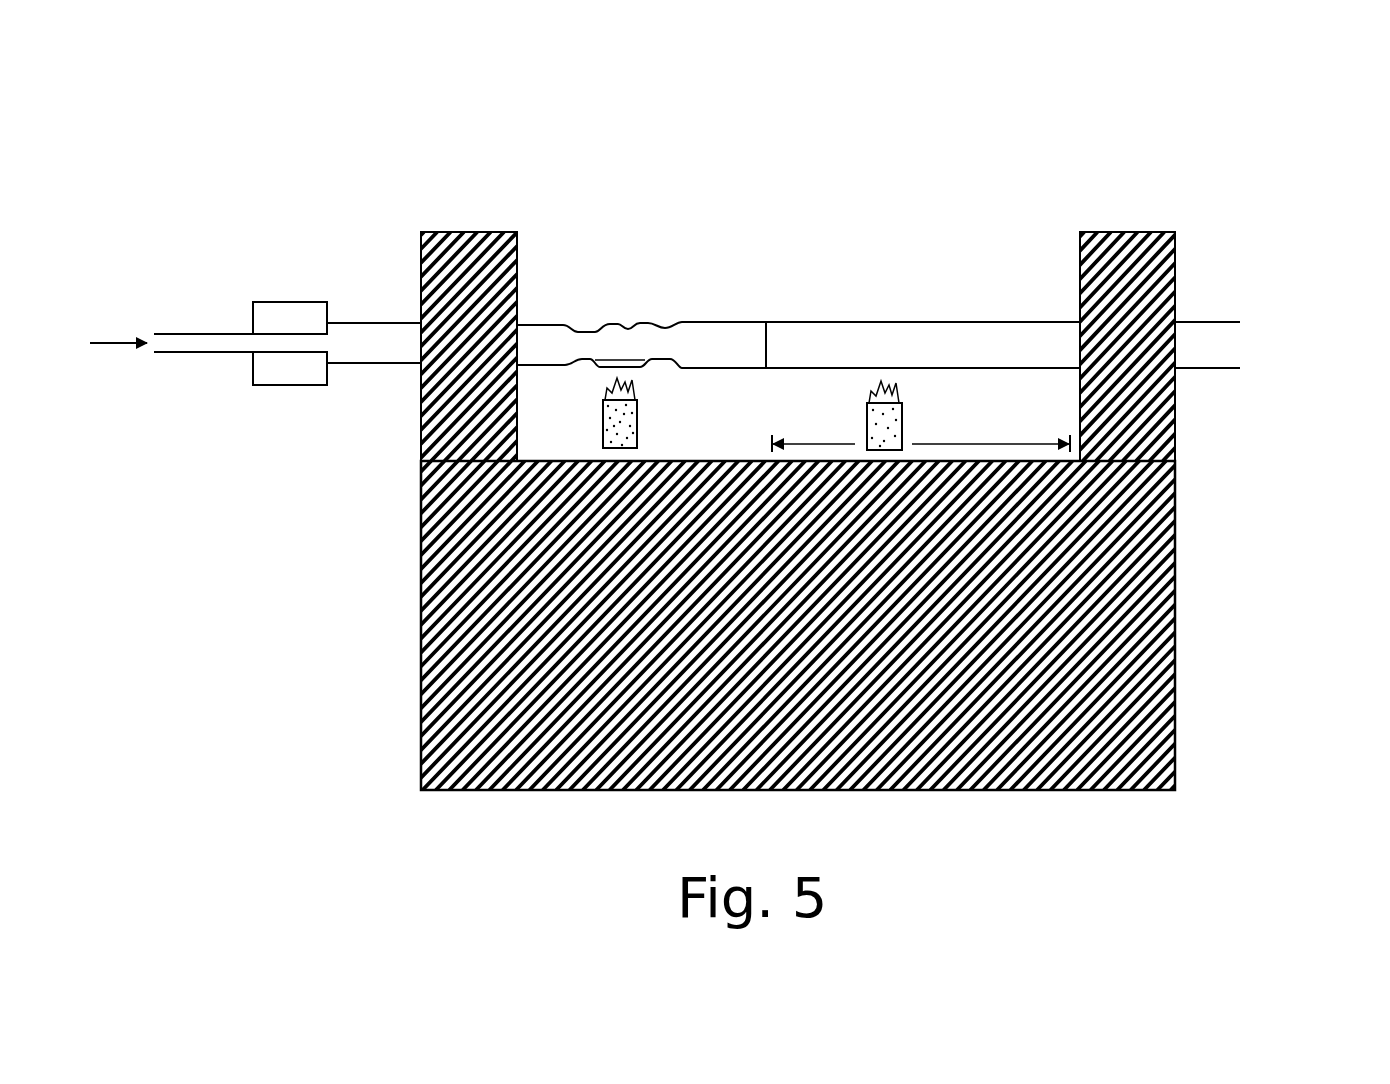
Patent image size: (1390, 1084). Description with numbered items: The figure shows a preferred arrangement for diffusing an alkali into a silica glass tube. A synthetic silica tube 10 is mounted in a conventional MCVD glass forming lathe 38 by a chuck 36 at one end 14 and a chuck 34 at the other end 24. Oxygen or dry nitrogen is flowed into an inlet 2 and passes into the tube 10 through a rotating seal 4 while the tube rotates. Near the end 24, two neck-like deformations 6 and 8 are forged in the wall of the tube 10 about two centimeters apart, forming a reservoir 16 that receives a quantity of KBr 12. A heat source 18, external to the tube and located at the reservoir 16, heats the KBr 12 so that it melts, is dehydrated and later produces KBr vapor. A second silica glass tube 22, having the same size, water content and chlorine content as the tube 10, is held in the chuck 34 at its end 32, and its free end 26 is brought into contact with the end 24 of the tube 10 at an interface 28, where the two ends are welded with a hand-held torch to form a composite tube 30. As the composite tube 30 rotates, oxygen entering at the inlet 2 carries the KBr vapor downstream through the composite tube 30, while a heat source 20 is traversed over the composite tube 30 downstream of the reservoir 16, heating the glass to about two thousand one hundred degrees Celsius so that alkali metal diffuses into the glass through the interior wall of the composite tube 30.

The inlet 2 is at (212, 330).
The rotating seal 4 is at (270, 300).
The neck-like deformation 6 is at (583, 361).
The neck-like deformation 8 is at (665, 325).
The synthetic silica tube 10 is at (540, 313).
The KBr 12 is at (635, 357).
The end 14 is at (380, 368).
The reservoir 16 is at (637, 323).
The heat source 18 is at (603, 417).
The heat source 20 is at (902, 425).
The second silica glass tube 22 is at (980, 310).
The end 24 is at (745, 372).
The free end 26 is at (810, 322).
The interface 28 is at (768, 343).
The composite tube 30 is at (762, 297).
The end 32 is at (1225, 372).
The chuck 34 is at (1130, 230).
The chuck 36 is at (433, 230).
The MCVD glass forming lathe 38 is at (410, 512).